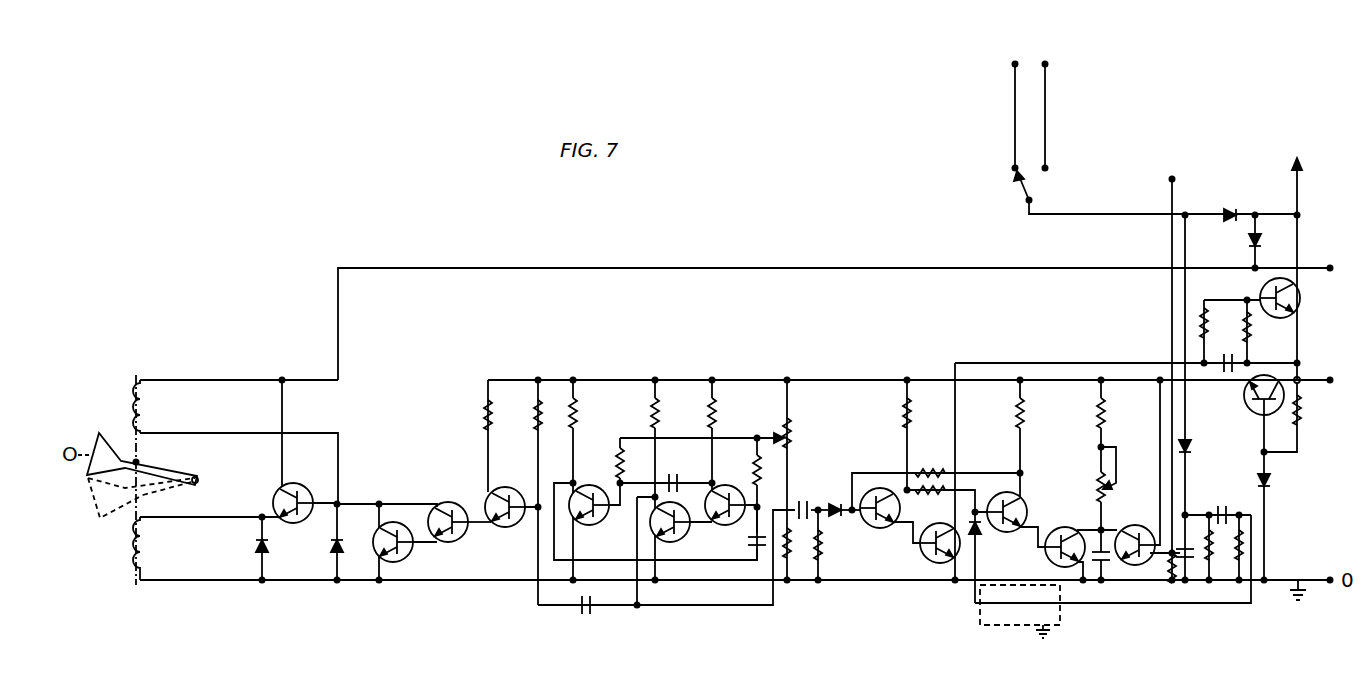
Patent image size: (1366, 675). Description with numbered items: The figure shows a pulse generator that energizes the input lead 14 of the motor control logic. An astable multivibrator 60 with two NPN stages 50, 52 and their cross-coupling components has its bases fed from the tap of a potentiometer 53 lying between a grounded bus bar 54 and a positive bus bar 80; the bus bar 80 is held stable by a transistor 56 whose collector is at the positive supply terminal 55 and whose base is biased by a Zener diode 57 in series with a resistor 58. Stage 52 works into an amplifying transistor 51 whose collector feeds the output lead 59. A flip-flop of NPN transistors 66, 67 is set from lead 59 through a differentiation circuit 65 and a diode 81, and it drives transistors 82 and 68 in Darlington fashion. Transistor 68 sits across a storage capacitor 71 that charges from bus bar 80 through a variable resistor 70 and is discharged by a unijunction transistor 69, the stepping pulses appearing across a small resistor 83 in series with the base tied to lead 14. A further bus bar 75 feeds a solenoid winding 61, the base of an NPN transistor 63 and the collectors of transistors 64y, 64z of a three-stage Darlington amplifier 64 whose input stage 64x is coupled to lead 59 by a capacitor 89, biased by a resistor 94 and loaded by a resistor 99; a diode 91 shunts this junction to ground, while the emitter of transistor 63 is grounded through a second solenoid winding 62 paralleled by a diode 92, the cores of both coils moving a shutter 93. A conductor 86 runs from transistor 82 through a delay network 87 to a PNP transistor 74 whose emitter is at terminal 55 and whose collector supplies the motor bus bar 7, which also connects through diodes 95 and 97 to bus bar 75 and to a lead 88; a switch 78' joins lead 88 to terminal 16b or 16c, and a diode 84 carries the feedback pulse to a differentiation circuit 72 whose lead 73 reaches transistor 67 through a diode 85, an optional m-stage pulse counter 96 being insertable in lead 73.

The bus bar 7 is at (1302, 176).
The input lead 14 is at (1175, 188).
The terminal 16b is at (1048, 96).
The terminal 16c is at (1012, 100).
The multivibrator stage 50 is at (592, 485).
The amplifying transistor 51 is at (681, 537).
The multivibrator stage 52 is at (730, 525).
The potentiometer 53 is at (790, 428).
The grounded bus bar 54 is at (838, 582).
The positive supply terminal 55 is at (1305, 378).
The transistor 56 is at (1250, 410).
The Zener diode 57 is at (1272, 480).
The resistor 58 is at (1301, 405).
The output lead 59 is at (640, 607).
The astable multivibrator 60 is at (669, 496).
The solenoid winding 61 is at (148, 412).
The solenoid winding 62 is at (148, 550).
The NPN transistor 63 is at (270, 487).
The three-stage Darlington-type amplifier 64 is at (444, 497).
The input stage 64x is at (513, 467).
The Darlington stage 64y is at (459, 536).
The output stage 64z is at (406, 542).
The differentiation circuit 65 is at (812, 506).
The flip-flop transistor 66 is at (866, 522).
The flip-flop transistor 67 is at (1015, 497).
The amplifying transistor 68 is at (1045, 560).
The unijunction transistor 69 is at (1152, 511).
The variable resistor 70 is at (1100, 488).
The storage capacitor 71 is at (1095, 562).
The differentiation circuit 72 is at (1222, 535).
The output lead 73 is at (1195, 603).
The PNP transistor 74 is at (1301, 298).
The bus bar 75 is at (666, 268).
The switch 78' is at (1155, 192).
The positive bus bar 80 is at (875, 380).
The diode 81 is at (843, 498).
The transistor 82 is at (945, 563).
The resistor 83 is at (1161, 568).
The diode 84 is at (1190, 445).
The diode 85 is at (988, 557).
The conductor 86 is at (963, 347).
The delay network 87 is at (1228, 322).
The lead 88 is at (1170, 312).
The capacitor 89 is at (580, 608).
The diode 91 is at (332, 545).
The diode 92 is at (257, 545).
The shutter 93 is at (173, 475).
The resistor 94 is at (534, 420).
The diode 95 is at (1260, 246).
The m-stage pulse counter 96 is at (1020, 628).
The diode 97 is at (1225, 222).
The resistor 99 is at (485, 412).